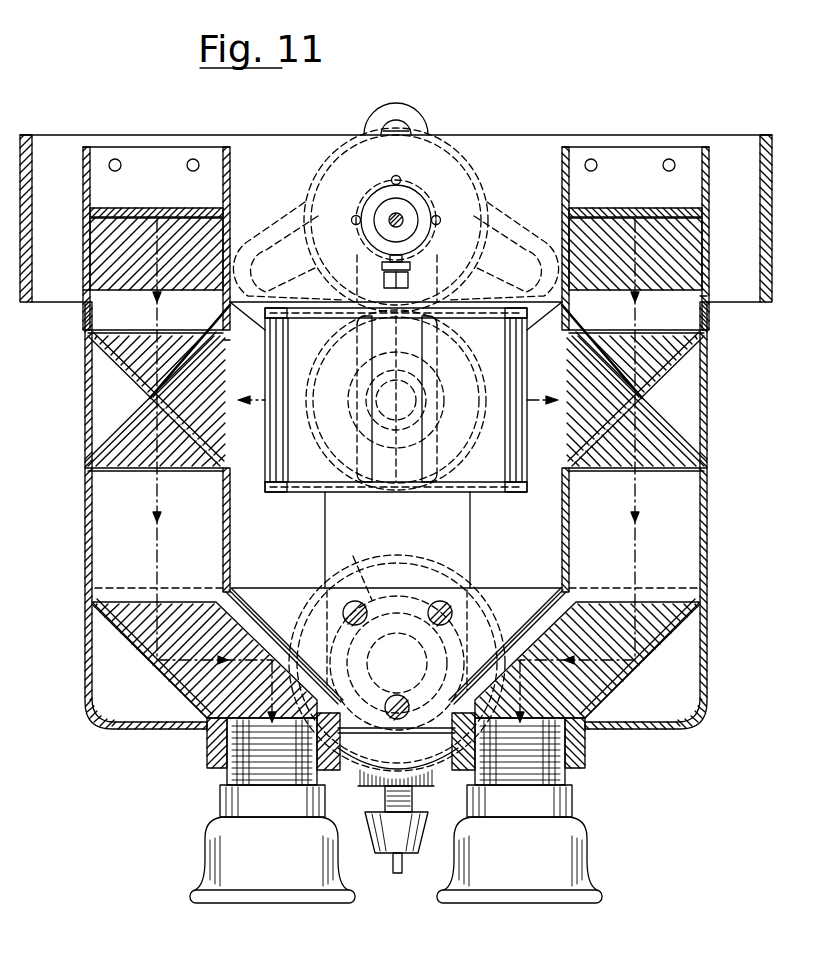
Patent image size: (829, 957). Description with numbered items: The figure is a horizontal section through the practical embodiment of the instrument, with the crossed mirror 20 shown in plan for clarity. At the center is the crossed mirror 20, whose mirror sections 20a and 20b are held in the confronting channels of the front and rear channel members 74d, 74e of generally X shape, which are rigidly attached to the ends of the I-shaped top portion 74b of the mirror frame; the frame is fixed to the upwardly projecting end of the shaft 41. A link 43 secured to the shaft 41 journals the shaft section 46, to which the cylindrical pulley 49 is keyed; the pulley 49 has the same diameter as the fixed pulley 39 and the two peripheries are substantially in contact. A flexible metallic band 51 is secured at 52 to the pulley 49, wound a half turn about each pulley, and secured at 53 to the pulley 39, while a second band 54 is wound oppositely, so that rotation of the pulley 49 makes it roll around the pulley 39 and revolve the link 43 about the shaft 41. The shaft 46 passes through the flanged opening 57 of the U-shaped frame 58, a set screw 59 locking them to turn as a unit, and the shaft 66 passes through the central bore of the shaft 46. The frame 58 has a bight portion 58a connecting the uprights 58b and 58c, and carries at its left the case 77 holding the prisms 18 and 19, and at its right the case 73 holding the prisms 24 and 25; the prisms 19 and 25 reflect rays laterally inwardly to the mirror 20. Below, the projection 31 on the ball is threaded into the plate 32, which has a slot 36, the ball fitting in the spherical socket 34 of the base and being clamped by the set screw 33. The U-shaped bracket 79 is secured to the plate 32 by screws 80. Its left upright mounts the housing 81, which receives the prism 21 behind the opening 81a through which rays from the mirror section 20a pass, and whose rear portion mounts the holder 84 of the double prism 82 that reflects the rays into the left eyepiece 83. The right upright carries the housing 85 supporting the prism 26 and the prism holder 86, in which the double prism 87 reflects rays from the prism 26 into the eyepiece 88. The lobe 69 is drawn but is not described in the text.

The prism 18 is at (122, 228).
The prism 24 is at (655, 228).
The prism 19 is at (128, 368).
The prism 21 is at (126, 440).
The prism 25 is at (672, 360).
The prism 26 is at (676, 434).
The crossed mirror 20 is at (396, 419).
The mirror section 20a is at (270, 480).
The mirror section 20b is at (522, 480).
The projection 31 is at (372, 663).
The plate 32 is at (326, 547).
The set screw 33 is at (413, 798).
The spherical socket 34 is at (360, 750).
The slot 36 is at (506, 238).
The pulley 39 is at (470, 444).
The shaft 41 is at (420, 396).
The link 43 is at (356, 360).
The shaft section 46 is at (414, 228).
The pulley 49 is at (330, 170).
The flexible metallic band 51 is at (412, 130).
The attachment point 52 is at (399, 126).
The attachment point 53 is at (397, 484).
The flexible metallic band 54 is at (308, 187).
The flanged opening 57 is at (378, 228).
The U-shaped frame 58 is at (396, 223).
The bight portion 58a is at (525, 135).
The upright 58b is at (32, 208).
The upright 58c is at (760, 214).
The set screw 59 is at (384, 276).
The shaft 66 is at (401, 214).
The dome 69 is at (380, 128).
The case 73 is at (707, 296).
The top portion 74b is at (422, 340).
The front channel member 74d is at (322, 314).
The rear channel member 74e is at (352, 488).
The case 77 is at (83, 292).
The U-shaped bracket 79 is at (512, 588).
The screws 80 is at (343, 618).
The prism housing and eyepiece support 81 is at (86, 568).
The opening 81a is at (228, 346).
The double prism 82 is at (180, 690).
The left eyepiece 83 is at (205, 838).
The holder 84 is at (130, 645).
The prism housing and eyepiece support 85 is at (706, 550).
The prism holder 86 is at (652, 660).
The double prism 87 is at (598, 604).
The eyepiece 88 is at (590, 833).